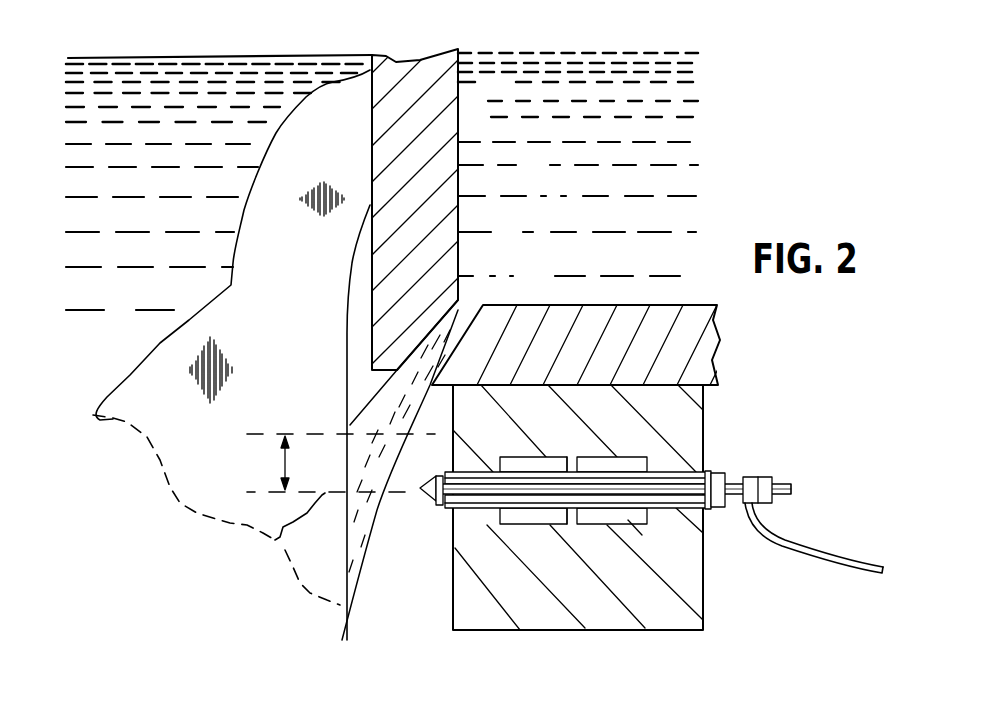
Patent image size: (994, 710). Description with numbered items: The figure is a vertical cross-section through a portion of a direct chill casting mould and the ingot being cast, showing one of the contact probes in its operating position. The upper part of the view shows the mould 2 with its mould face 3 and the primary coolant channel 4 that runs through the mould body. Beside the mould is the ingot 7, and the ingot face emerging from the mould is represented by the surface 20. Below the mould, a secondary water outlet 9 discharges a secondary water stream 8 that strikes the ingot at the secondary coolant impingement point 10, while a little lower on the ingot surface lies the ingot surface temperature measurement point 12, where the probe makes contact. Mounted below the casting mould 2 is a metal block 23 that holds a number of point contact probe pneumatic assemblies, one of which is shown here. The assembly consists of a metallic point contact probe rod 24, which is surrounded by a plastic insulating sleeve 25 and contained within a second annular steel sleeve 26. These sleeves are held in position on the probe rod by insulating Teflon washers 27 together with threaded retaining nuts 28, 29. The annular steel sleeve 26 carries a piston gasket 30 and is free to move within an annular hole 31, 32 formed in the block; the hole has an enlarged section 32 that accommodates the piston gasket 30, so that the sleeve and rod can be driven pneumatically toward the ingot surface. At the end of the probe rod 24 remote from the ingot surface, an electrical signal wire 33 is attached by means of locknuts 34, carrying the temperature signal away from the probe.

The mould 2 is at (430, 146).
The mould face 3 is at (372, 148).
The primary coolant channel 4 is at (523, 174).
The ingot 7 is at (126, 350).
The secondary water stream 8 is at (440, 405).
The secondary water outlet 9 is at (456, 318).
The secondary coolant impingement point 10 is at (307, 433).
The ingot surface temperature measurement point 12 is at (280, 547).
The surface 20 is at (347, 290).
The metal block 23 is at (657, 419).
The point contact probe rod 24 is at (581, 512).
The plastic insulating sleeve 25 is at (497, 512).
The annular steel sleeve 26 is at (517, 512).
The insulating Teflon washer 27 is at (712, 506).
The threaded retaining nut 28 is at (445, 503).
The threaded retaining nut 29 is at (724, 505).
The piston gasket 30 is at (647, 456).
The annular hole 31 is at (665, 458).
The enlarged section of annular hole 32 is at (628, 520).
The electrical signal wire 33 is at (812, 552).
The locknut 34 is at (772, 502).